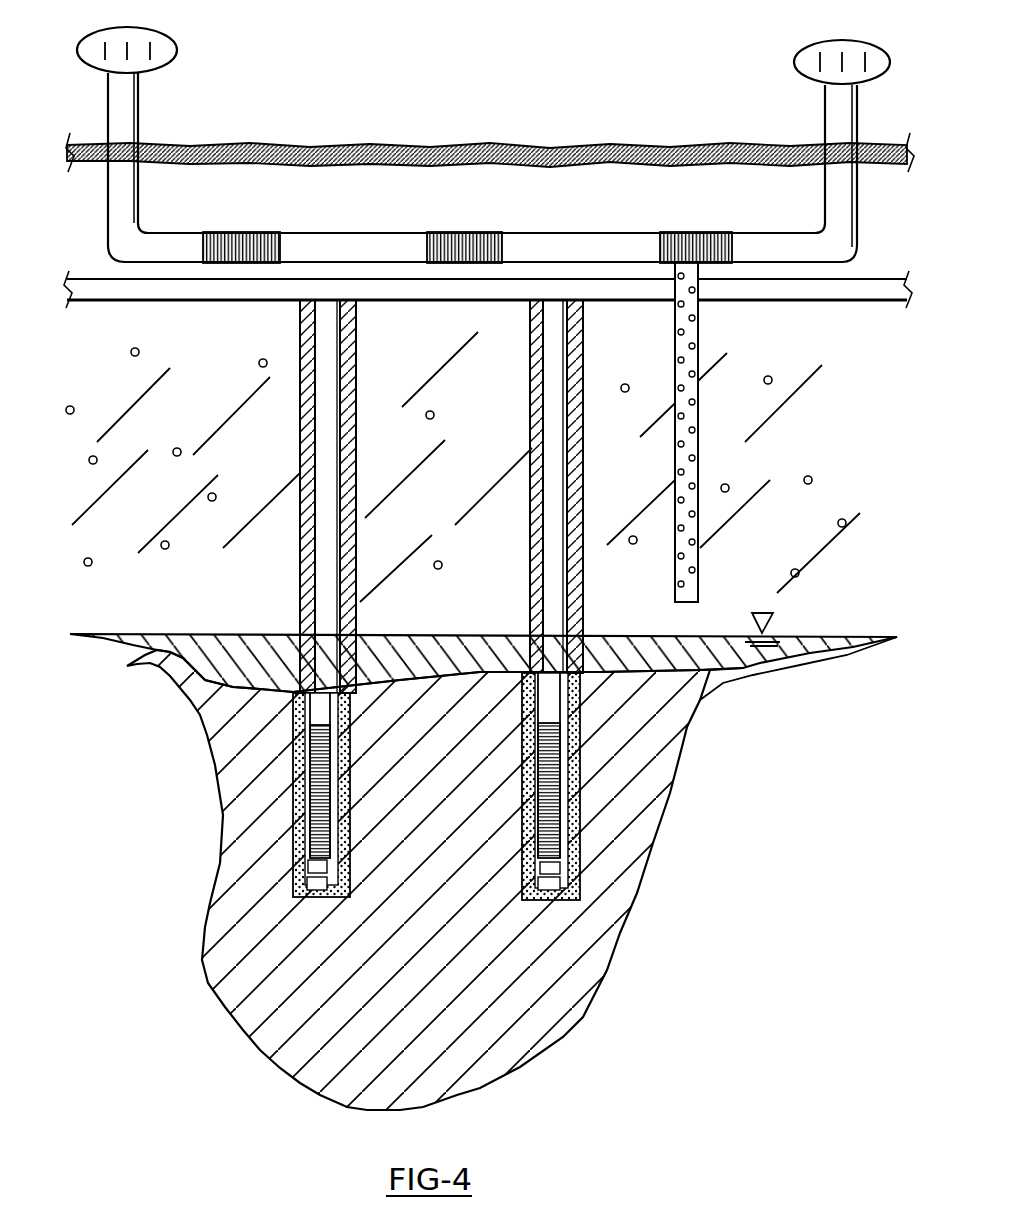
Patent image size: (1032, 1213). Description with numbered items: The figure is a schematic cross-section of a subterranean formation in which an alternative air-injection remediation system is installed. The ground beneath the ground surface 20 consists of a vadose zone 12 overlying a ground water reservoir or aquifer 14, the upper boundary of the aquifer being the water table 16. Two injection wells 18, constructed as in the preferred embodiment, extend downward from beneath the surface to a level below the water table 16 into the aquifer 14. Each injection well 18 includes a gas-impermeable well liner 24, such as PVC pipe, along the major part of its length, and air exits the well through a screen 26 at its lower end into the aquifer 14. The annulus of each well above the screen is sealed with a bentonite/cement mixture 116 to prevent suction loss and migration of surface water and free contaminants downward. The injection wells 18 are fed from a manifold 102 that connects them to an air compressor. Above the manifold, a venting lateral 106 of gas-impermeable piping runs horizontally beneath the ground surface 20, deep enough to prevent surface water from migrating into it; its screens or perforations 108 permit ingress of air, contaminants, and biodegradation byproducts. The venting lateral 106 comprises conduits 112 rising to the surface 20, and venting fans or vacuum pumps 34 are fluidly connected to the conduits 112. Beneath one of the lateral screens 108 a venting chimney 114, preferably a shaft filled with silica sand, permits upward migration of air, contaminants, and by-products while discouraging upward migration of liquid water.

The vadose zone 12 is at (778, 552).
The ground water reservoir or aquifer 14 is at (667, 755).
The water table 16 is at (793, 637).
The injection well 18 is at (300, 350).
The ground surface 20 is at (390, 147).
The gas-impermeable well liner 24 is at (323, 458).
The screen 26 is at (310, 818).
The venting fan or vacuum pump 34 is at (177, 56).
The manifold 102 is at (788, 293).
The venting lateral 106 is at (598, 235).
The screen or perforation 108 is at (472, 235).
The conduit 112 is at (140, 203).
The venting chimney 114 is at (700, 472).
The bentonite/cement mixture 116 is at (300, 605).